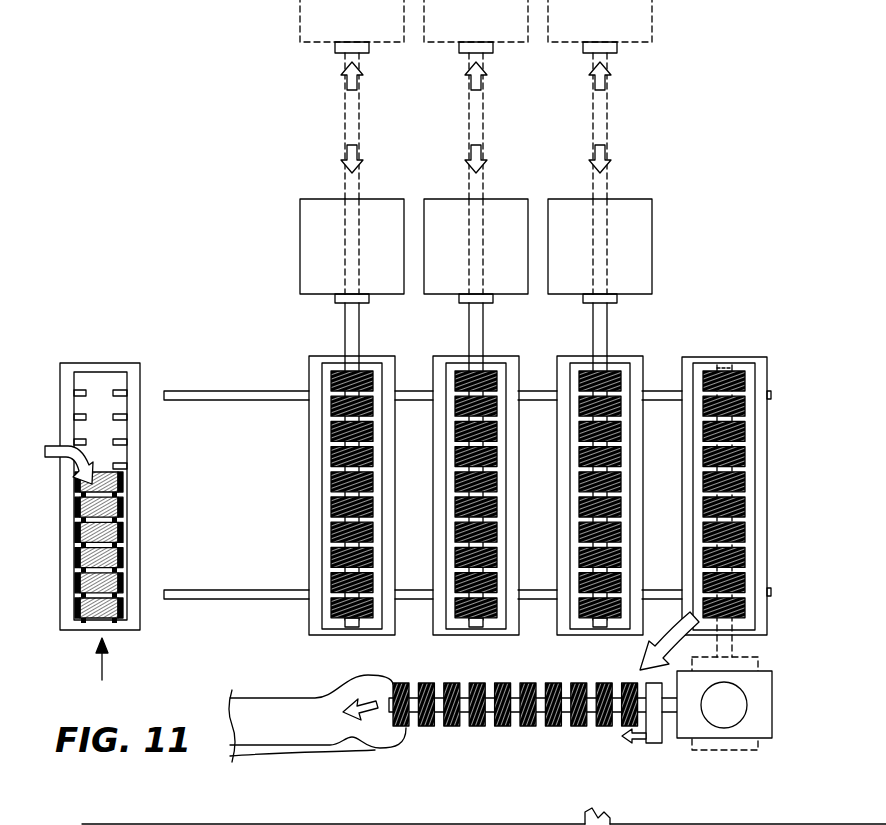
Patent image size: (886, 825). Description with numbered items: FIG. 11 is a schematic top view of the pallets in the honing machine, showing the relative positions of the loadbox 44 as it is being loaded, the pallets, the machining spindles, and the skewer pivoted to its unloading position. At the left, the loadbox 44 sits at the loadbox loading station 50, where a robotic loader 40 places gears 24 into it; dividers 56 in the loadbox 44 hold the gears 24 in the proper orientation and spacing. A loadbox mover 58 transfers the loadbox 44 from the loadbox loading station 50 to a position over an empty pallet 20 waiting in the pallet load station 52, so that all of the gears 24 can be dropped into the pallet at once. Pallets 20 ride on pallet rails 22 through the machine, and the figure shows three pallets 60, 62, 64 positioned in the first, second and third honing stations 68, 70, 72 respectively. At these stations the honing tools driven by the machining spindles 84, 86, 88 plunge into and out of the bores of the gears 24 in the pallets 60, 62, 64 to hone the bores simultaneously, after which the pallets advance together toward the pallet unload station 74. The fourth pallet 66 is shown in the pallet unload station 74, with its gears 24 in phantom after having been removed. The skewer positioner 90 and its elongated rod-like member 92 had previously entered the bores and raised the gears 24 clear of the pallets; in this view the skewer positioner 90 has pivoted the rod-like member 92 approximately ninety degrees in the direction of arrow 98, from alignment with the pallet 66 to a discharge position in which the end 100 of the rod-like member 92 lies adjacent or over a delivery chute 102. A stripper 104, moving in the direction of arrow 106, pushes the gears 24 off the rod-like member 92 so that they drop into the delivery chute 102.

The pallet 20 is at (118, 531).
The pallet rails 22 is at (490, 705).
The gear 24 is at (332, 531).
The robotic loader 40 is at (103, 678).
The loadbox 44 is at (140, 447).
The loadbox loading station 50 is at (103, 504).
The pallet load station 52 is at (423, 463).
The dividers 56 is at (77, 417).
The loadbox mover 58 is at (648, 726).
The pallet 60 is at (315, 627).
The pallet 62 is at (440, 627).
The pallet 64 is at (565, 627).
The pallet 66 is at (690, 632).
The first honing station 68 is at (330, 337).
The second honing station 70 is at (469, 337).
The third honing station 72 is at (597, 337).
The pallet unload station 74 is at (705, 497).
The machining spindle 84 is at (312, 197).
The machining spindle 86 is at (440, 197).
The machining spindle 88 is at (571, 197).
The skewer positioner 90 is at (750, 728).
The rod-like member 92 is at (670, 710).
The arrow 98 is at (668, 616).
The end of the rod-like member 100 is at (382, 712).
The delivery chute 102 is at (290, 722).
The stripper 104 is at (653, 742).
The arrow 106 is at (620, 742).